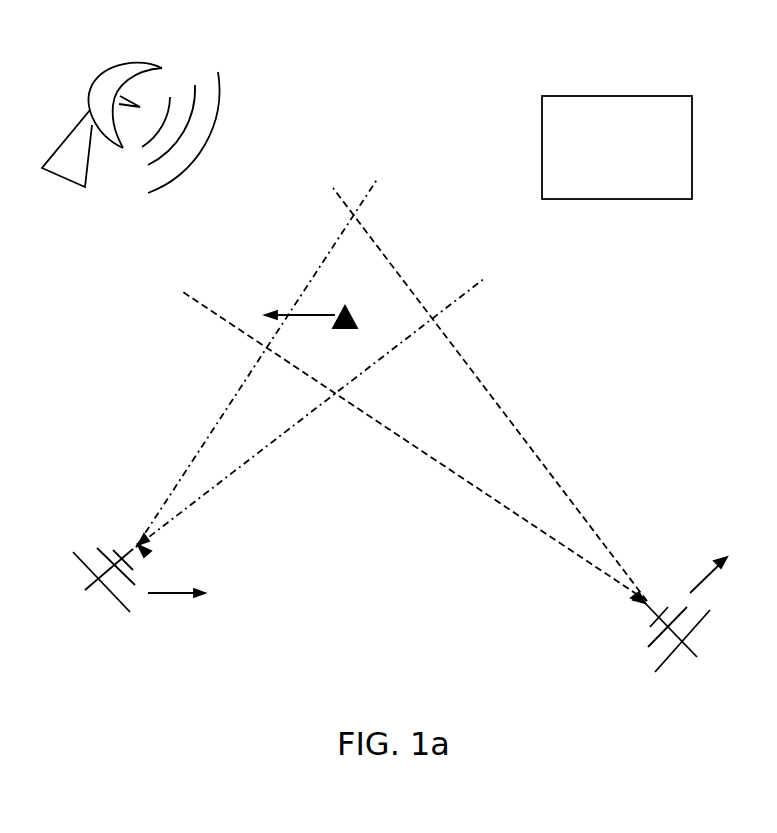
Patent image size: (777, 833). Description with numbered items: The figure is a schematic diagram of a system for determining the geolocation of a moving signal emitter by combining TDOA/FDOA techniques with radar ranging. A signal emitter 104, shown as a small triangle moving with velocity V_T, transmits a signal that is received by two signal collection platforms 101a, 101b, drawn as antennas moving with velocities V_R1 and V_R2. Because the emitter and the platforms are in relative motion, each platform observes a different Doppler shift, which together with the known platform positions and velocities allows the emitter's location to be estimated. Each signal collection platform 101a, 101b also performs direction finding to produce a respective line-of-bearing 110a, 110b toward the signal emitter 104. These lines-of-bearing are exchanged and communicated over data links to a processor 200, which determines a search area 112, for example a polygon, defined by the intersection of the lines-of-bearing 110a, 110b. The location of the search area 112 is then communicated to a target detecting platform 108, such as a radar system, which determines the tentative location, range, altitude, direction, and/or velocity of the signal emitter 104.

The target detecting platform 108 is at (103, 75).
The processor 200 is at (610, 95).
The signal emitter 104 is at (347, 310).
The search area 112 is at (398, 238).
The line-of-bearing 110a is at (222, 418).
The line-of-bearing 110b is at (488, 400).
The signal collection platform 101a is at (87, 591).
The signal collection platform 101b is at (662, 662).